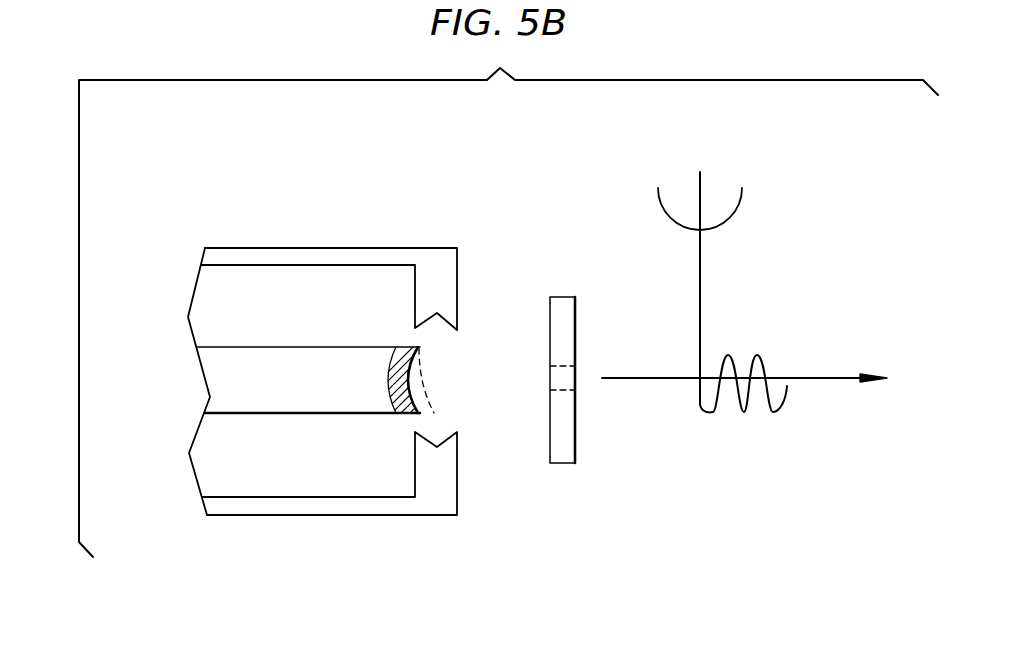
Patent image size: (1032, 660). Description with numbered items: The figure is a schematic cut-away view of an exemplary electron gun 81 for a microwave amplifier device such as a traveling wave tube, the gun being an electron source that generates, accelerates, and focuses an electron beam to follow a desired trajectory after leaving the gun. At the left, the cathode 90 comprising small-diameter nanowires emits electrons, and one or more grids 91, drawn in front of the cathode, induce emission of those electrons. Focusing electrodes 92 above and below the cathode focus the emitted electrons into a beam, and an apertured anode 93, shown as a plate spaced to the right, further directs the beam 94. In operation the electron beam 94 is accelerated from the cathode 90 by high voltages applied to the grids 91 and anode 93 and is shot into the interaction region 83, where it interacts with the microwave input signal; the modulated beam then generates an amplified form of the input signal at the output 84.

The electron gun 81 is at (598, 205).
The interaction region 83 is at (874, 270).
The output 84 is at (705, 195).
The cathode 90 is at (395, 412).
The grid 91 is at (423, 378).
The focusing electrodes 92 is at (457, 283).
The apertured anode 93 is at (577, 318).
The electron beam 94 is at (674, 379).